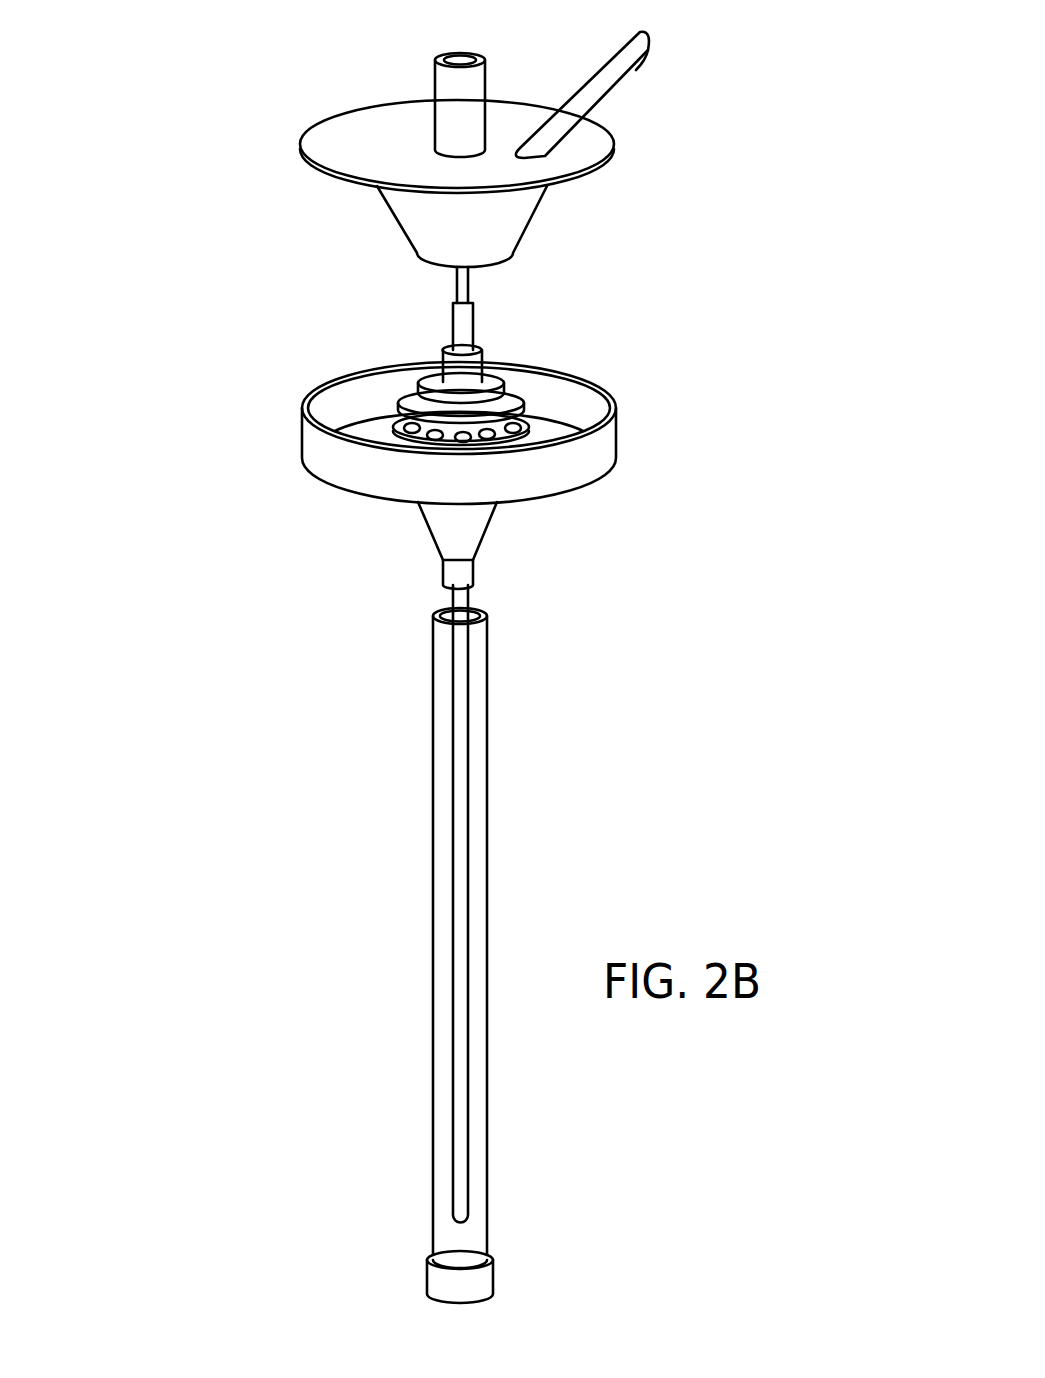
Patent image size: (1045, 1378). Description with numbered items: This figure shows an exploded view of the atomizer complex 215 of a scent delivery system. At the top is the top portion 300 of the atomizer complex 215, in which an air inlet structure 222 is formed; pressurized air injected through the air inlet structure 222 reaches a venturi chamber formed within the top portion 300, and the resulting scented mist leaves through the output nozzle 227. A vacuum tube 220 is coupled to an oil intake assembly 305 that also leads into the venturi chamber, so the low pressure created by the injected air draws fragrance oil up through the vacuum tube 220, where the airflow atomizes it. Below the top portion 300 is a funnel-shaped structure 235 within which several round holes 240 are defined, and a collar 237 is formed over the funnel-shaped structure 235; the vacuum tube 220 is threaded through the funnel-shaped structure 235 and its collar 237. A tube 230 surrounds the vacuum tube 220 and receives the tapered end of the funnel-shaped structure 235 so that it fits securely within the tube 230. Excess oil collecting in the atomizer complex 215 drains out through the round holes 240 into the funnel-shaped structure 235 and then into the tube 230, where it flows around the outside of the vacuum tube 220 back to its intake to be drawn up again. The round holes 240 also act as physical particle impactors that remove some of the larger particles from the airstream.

The top portion 300 is at (314, 148).
The air inlet structure 222 is at (448, 52).
The output nozzle 227 is at (630, 63).
The oil intake assembly 305 is at (470, 283).
The vacuum tube 220 is at (452, 325).
The collar 237 is at (517, 398).
The round holes 240 is at (393, 418).
The atomizer complex 215 is at (560, 433).
The funnel-shaped structure 235 is at (413, 440).
The tube 230 is at (433, 835).